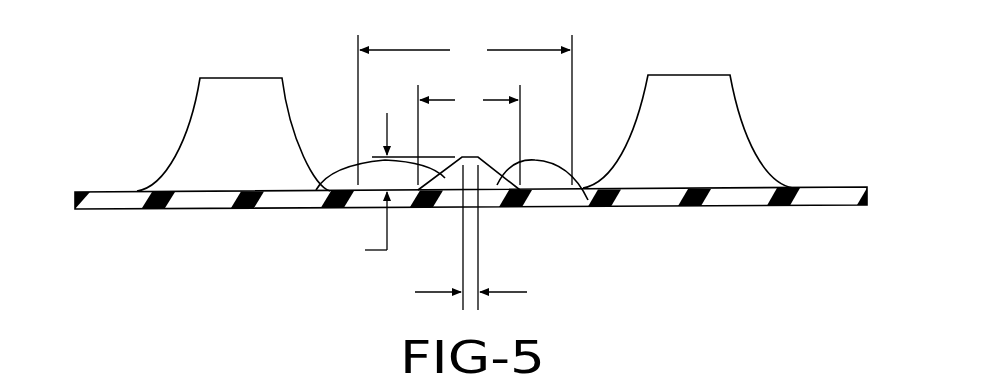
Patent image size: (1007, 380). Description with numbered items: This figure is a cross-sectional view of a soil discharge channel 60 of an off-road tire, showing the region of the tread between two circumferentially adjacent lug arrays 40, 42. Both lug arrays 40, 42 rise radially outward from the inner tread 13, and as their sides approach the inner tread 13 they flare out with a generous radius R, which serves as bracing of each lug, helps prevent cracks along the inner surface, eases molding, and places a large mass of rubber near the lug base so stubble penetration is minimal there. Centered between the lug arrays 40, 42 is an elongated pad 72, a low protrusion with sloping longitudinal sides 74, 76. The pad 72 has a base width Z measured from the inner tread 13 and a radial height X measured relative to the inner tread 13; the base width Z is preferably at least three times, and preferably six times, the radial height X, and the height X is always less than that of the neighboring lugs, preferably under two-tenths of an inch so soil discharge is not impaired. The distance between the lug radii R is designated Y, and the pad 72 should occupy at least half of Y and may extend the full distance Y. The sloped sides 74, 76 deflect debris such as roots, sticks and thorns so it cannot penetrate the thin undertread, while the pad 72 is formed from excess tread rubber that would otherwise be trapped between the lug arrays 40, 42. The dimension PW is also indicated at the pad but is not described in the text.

The inner tread 13 is at (830, 187).
The lug array 40 is at (465, 95).
The lug array 42 is at (242, 78).
The soil discharge channel 60 is at (615, 118).
The elongated pad 72 is at (488, 182).
The sloping longitudinal side 74 is at (316, 190).
The sloping longitudinal side 76 is at (588, 200).
The radius R is at (307, 96).
The radial height X is at (397, 187).
The distance between the lug radii Y is at (465, 110).
The base width Z is at (469, 135).
The trace width dimension PW is at (491, 238).